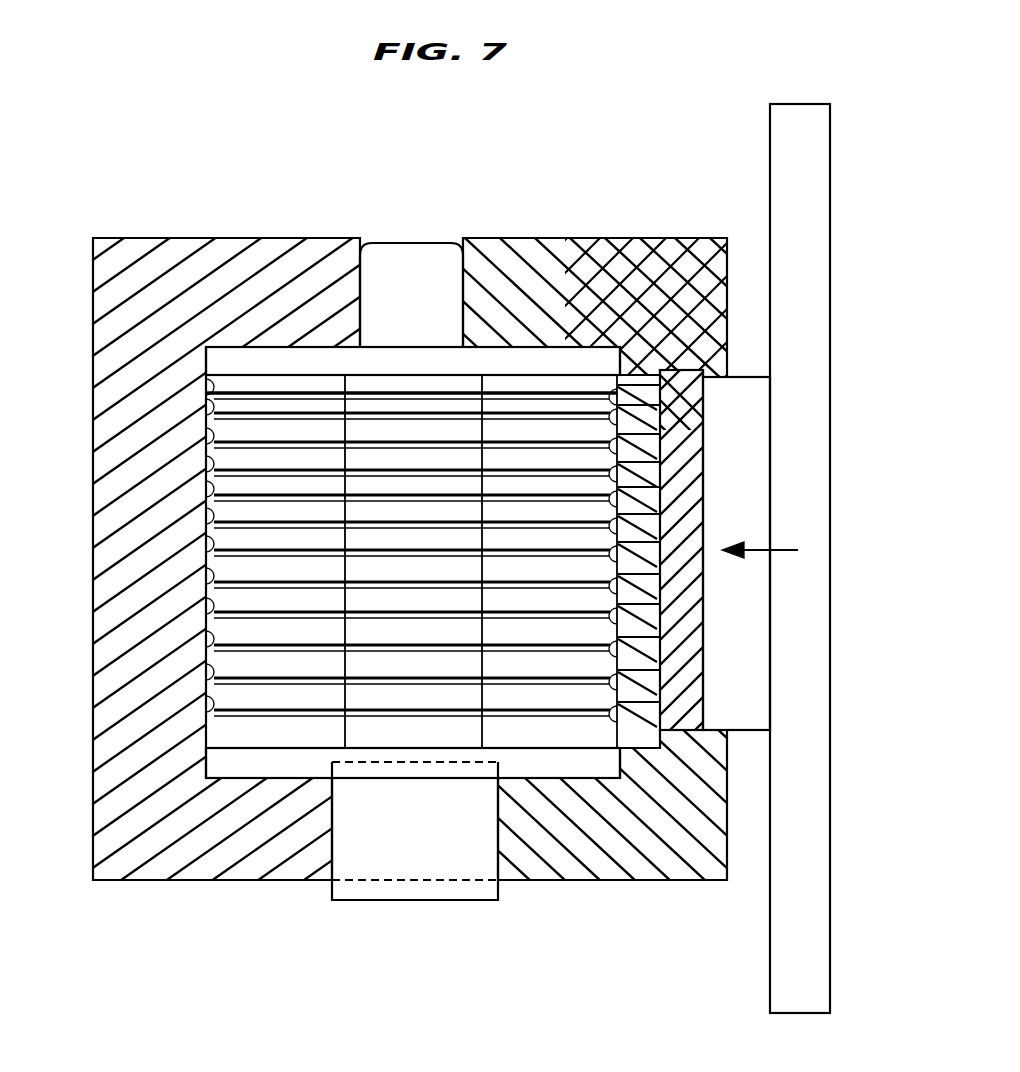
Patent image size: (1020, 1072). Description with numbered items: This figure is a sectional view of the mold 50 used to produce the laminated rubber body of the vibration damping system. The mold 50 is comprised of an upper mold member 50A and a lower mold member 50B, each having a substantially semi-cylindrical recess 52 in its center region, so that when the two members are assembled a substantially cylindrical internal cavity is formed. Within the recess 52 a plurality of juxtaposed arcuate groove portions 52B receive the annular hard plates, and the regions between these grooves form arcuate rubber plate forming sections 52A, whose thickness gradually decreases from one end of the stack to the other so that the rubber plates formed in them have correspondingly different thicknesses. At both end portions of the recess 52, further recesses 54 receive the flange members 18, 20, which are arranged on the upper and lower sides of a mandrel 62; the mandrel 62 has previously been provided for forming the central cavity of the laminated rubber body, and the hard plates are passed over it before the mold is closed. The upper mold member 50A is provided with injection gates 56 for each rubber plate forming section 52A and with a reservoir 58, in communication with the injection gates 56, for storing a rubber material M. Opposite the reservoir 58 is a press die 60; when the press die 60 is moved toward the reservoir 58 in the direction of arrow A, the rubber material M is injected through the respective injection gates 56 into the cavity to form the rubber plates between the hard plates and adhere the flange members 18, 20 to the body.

The flange member 18 is at (313, 758).
The flange member 20 is at (341, 353).
The mold 50 is at (486, 556).
The upper mold member 50A is at (598, 238).
The lower mold member 50B is at (273, 240).
The semi-cylindrical recess 52 is at (466, 565).
The rubber plate forming section 52A is at (560, 433).
The arcuate groove portion 52B is at (303, 458).
The recess 54 is at (227, 347).
The injection gate 56 is at (640, 425).
The reservoir 58 is at (688, 497).
The press die 60 is at (742, 377).
The mandrel 62 is at (418, 695).
The rubber material M is at (683, 597).
The arrow A is at (775, 550).